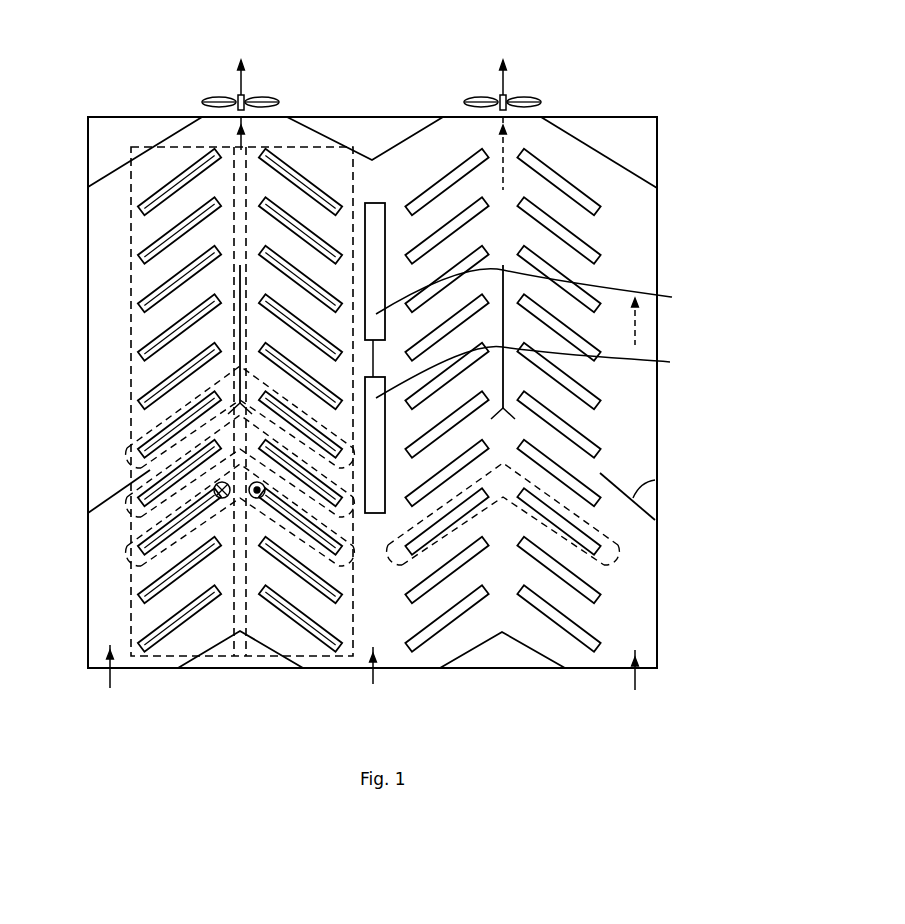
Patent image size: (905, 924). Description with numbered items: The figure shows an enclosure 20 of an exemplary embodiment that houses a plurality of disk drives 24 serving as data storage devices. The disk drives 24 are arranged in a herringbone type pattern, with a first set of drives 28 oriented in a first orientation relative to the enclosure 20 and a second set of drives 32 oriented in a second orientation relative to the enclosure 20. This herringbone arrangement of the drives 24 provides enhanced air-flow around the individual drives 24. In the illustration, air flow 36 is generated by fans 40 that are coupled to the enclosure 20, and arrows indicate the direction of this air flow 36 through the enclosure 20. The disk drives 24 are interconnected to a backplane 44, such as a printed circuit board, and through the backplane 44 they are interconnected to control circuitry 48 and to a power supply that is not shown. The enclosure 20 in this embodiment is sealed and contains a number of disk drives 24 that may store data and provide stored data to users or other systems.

The enclosure 20 is at (712, 95).
The disk drives 24 is at (187, 622).
The first set of drives 28 is at (130, 240).
The second set of drives 32 is at (353, 170).
The air flow 36 is at (246, 130).
The fans 40 is at (280, 102).
The backplane 44 is at (628, 412).
The control circuitry 48 is at (537, 333).